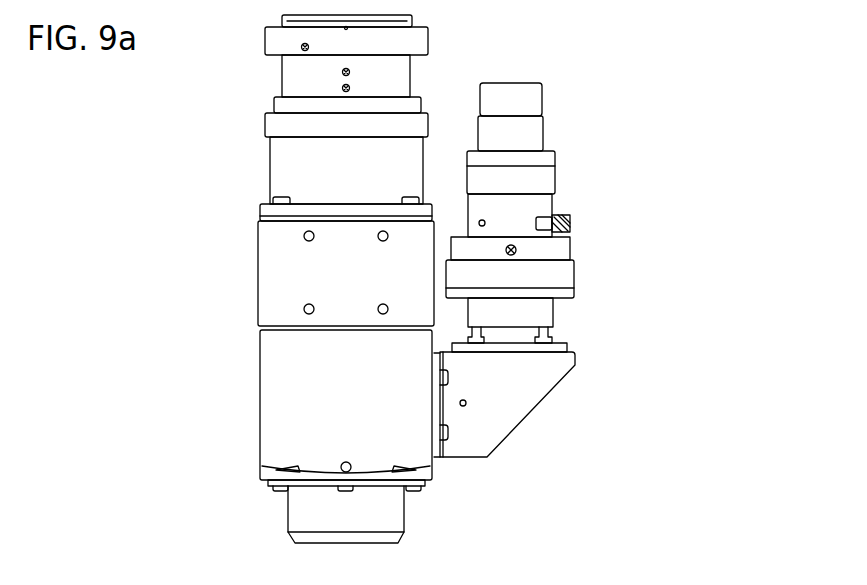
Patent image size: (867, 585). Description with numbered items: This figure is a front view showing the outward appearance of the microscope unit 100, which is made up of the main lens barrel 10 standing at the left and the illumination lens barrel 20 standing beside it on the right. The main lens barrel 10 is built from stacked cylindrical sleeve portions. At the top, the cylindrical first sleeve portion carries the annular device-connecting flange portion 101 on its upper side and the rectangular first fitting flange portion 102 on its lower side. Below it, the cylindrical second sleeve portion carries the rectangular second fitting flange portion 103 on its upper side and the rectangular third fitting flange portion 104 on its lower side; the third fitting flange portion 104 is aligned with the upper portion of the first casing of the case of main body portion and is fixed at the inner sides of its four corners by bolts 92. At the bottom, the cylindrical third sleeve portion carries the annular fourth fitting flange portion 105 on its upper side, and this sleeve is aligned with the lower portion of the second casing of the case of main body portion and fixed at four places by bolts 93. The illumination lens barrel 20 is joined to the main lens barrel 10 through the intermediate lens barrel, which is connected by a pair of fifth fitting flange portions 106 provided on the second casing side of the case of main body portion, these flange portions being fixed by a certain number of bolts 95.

The microscope unit 100 is at (528, 50).
The main lens barrel 10 is at (196, 171).
The illumination lens barrel 20 is at (589, 178).
The device-connecting flange portion 101 is at (270, 44).
The first fitting flange portion 102 is at (278, 106).
The second fitting flange portion 103 is at (273, 127).
The bolt 92 is at (272, 203).
The third fitting flange portion 104 is at (265, 216).
The fourth fitting flange portion 105 is at (268, 483).
The bolt 93 is at (275, 488).
The fifth fitting flange portion 106 is at (437, 417).
The bolt 95 is at (446, 432).